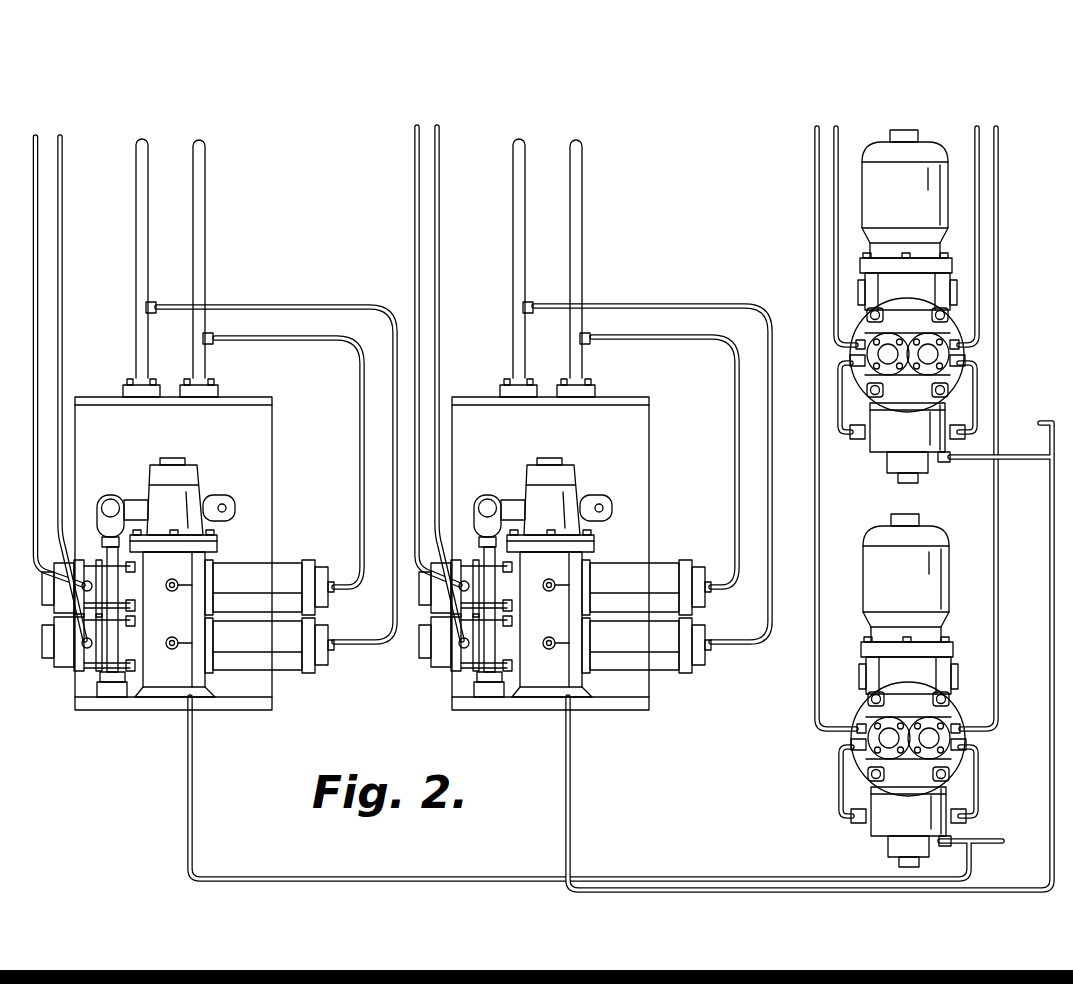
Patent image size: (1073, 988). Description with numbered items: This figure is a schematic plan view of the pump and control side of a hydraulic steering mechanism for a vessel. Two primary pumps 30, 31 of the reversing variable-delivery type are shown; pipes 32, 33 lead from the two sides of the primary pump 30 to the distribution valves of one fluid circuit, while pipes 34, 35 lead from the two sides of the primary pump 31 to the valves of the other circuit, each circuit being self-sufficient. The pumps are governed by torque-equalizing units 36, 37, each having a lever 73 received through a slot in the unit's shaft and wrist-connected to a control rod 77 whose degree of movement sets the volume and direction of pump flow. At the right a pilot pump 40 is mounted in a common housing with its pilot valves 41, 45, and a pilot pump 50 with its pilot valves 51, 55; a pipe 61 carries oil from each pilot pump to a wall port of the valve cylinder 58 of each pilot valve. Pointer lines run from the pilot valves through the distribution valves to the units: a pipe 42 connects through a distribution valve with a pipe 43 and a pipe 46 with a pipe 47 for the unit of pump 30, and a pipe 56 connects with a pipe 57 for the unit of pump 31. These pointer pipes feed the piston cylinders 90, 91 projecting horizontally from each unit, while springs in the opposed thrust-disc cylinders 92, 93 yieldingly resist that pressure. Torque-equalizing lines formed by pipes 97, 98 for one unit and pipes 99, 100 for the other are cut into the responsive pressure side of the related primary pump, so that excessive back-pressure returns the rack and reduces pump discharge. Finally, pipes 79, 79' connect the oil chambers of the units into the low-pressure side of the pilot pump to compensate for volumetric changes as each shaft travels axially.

The primary pump 30 is at (657, 431).
The primary pump 31 is at (279, 432).
The pipe 32 is at (583, 266).
The pipe 33 is at (514, 261).
The pipe 34 is at (201, 243).
The pipe 35 is at (137, 185).
The torque-equalizing unit 36 is at (586, 482).
The torque-equalizing unit 37 is at (209, 480).
The pilot pump 40 is at (872, 457).
The pilot valve 41 is at (895, 372).
The pipe 42 is at (833, 235).
The pipe 43 is at (438, 170).
The pilot valve 45 is at (913, 332).
The pipe 46 is at (980, 199).
The pipe 47 is at (416, 212).
The pilot pump 50 is at (886, 846).
The pilot valve 51 is at (893, 758).
The pilot valve 55 is at (917, 716).
The pipe 56 is at (999, 656).
The pipe 57 is at (34, 228).
The valve cylinder 58 is at (61, 248).
The pipe 61 is at (837, 399).
The lever 73 is at (137, 503).
The control rod 77 is at (114, 643).
The pipe 79 is at (596, 788).
The pipe 79' is at (810, 656).
The piston cylinder 90 is at (98, 572).
The piston cylinder 91 is at (90, 672).
The thrust-disc cylinder 92 is at (284, 572).
The thrust-disc cylinder 93 is at (290, 665).
The pipe 97 is at (736, 532).
The pipe 98 is at (773, 618).
The pipe 99 is at (357, 582).
The pipe 100 is at (352, 648).